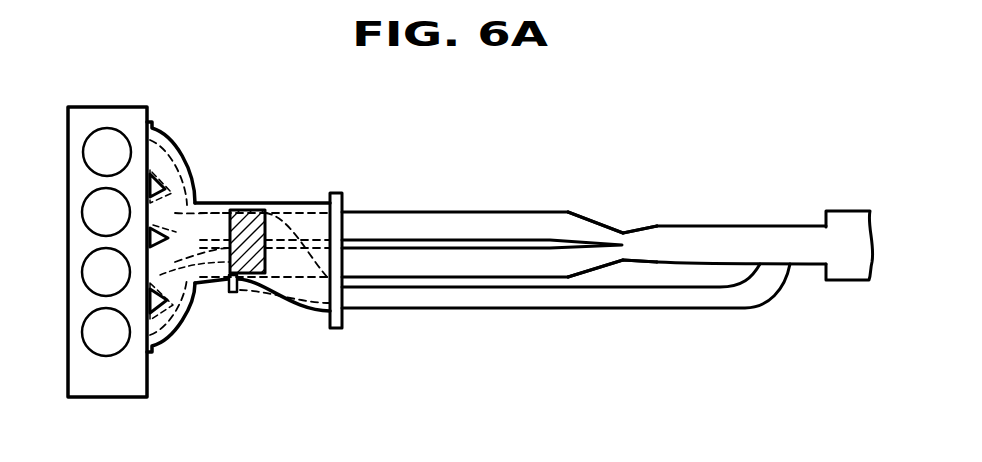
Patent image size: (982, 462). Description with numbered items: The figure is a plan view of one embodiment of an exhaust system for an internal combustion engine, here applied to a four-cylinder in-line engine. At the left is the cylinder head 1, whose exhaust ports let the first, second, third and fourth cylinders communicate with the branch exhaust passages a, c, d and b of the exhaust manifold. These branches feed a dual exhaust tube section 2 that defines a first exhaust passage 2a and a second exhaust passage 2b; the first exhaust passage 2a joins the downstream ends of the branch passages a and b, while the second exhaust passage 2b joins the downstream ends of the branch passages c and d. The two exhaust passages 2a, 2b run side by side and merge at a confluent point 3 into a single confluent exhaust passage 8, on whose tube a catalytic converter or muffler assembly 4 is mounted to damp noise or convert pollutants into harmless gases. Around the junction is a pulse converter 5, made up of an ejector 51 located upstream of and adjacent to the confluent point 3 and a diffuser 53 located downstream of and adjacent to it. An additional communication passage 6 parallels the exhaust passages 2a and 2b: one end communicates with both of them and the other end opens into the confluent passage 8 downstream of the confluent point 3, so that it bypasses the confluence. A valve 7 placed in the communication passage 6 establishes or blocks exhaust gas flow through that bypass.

The cylinder head 1 is at (132, 107).
The branch exhaust passage a is at (172, 160).
The branch exhaust passage b is at (172, 332).
The branch exhaust passage c is at (175, 210).
The branch exhaust passage d is at (173, 258).
The dual exhaust tube section 2 is at (215, 160).
The first exhaust passage 2a is at (440, 268).
The second exhaust passage 2b is at (453, 222).
The confluent point 3 is at (632, 250).
The catalytic converter or muffler assembly 4 is at (851, 222).
The pulse converter 5 is at (567, 163).
The ejector 51 is at (620, 211).
The diffuser 53 is at (678, 211).
The communication passage 6 is at (491, 306).
The valve 7 is at (233, 292).
The confluent exhaust passage 8 is at (770, 243).